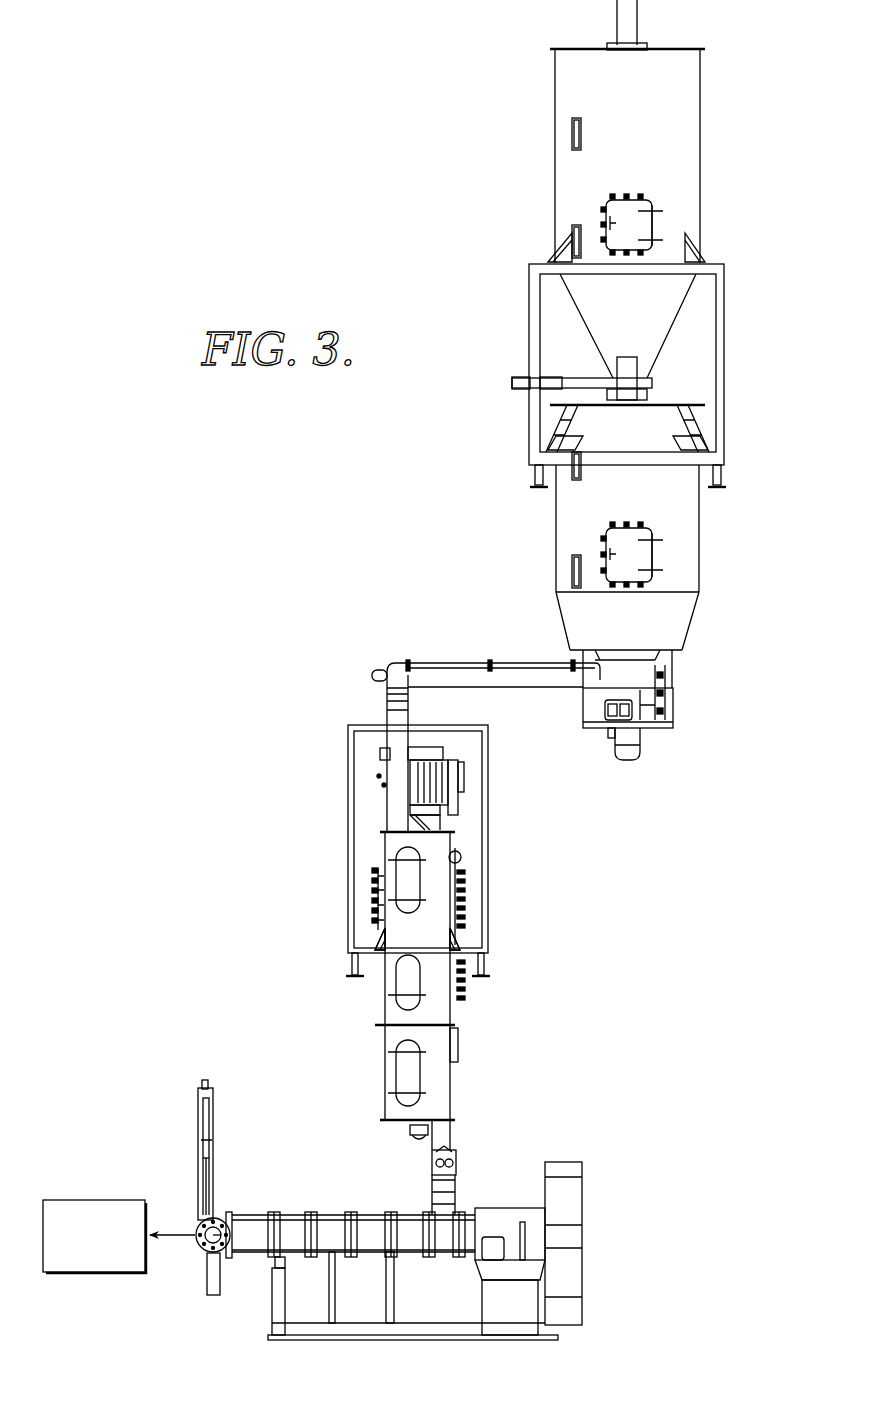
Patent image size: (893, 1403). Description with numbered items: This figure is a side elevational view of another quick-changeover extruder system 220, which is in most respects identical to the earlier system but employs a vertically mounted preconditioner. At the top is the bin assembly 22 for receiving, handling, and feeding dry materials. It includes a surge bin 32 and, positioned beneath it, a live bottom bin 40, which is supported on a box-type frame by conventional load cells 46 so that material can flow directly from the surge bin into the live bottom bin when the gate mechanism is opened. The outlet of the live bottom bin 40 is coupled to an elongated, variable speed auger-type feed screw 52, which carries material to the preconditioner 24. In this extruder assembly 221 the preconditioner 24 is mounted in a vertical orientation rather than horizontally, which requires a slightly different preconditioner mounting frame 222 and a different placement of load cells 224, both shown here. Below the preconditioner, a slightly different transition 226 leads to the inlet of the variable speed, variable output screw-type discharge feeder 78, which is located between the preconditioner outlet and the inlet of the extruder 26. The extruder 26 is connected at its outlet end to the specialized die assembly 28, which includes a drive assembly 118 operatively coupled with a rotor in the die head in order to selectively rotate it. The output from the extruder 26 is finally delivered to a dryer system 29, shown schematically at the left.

The extruder system 220 is at (508, 127).
The surge bin 32 is at (716, 125).
The bin assembly 22 is at (505, 282).
The load cells 46 is at (550, 443).
The extruder assembly 221 is at (521, 610).
The live bottom bin 40 is at (711, 559).
The feed screw 52 is at (531, 686).
The preconditioner mounting frame 222 is at (488, 845).
The load cells 224 is at (382, 950).
The preconditioner 24 is at (370, 1040).
The transition 226 is at (450, 1135).
The discharge feeder 78 is at (458, 1166).
The extruder 26 is at (330, 1207).
The die assembly 28 is at (194, 1261).
The drive assembly 118 is at (192, 1121).
The dryer system 29 is at (92, 1195).